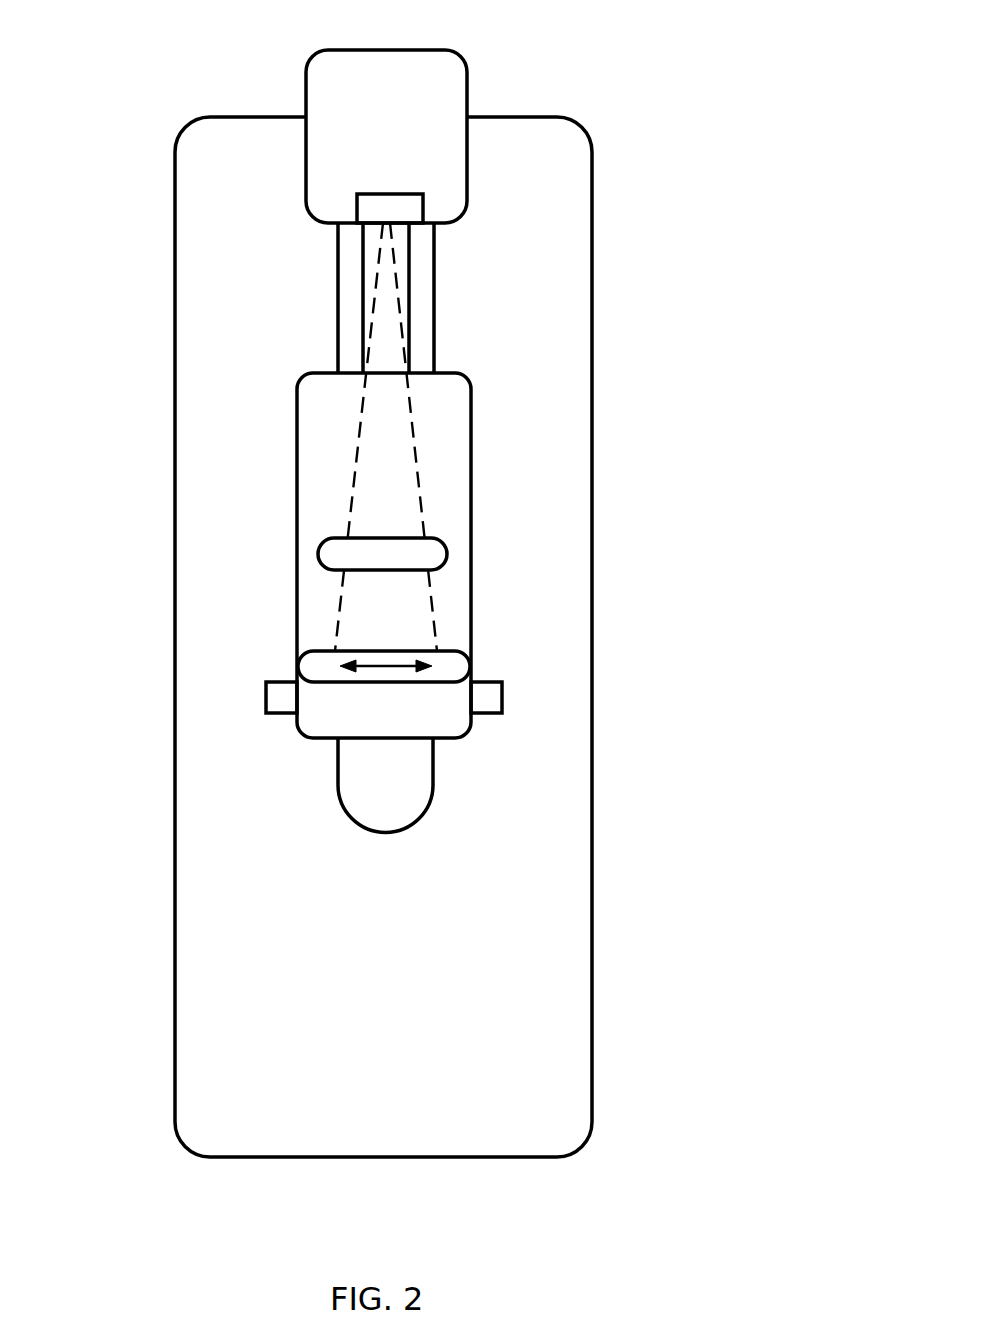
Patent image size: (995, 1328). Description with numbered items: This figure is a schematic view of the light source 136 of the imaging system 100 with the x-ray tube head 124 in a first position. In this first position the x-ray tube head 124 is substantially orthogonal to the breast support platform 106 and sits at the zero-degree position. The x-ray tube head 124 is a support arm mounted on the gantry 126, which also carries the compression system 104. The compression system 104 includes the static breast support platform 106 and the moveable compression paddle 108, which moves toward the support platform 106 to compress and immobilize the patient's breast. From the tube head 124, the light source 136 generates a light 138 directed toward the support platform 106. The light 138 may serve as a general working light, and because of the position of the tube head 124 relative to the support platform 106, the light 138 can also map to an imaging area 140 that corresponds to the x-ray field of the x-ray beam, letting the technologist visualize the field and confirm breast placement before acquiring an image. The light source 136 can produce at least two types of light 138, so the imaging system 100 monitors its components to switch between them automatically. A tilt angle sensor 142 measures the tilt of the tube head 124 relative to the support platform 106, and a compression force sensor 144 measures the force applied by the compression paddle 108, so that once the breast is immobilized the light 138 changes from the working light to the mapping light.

The imaging system 100 is at (757, 85).
The compression system 104 is at (277, 510).
The breast support platform 106 is at (433, 683).
The compression paddle 108 is at (447, 553).
The x-ray tube head 124 is at (307, 62).
The gantry 126 is at (175, 193).
The light source 136 is at (425, 208).
The light 138 is at (358, 443).
The imaging area 140 is at (387, 665).
The tilt angle sensor 142 is at (502, 698).
The compression force sensor 144 is at (266, 697).